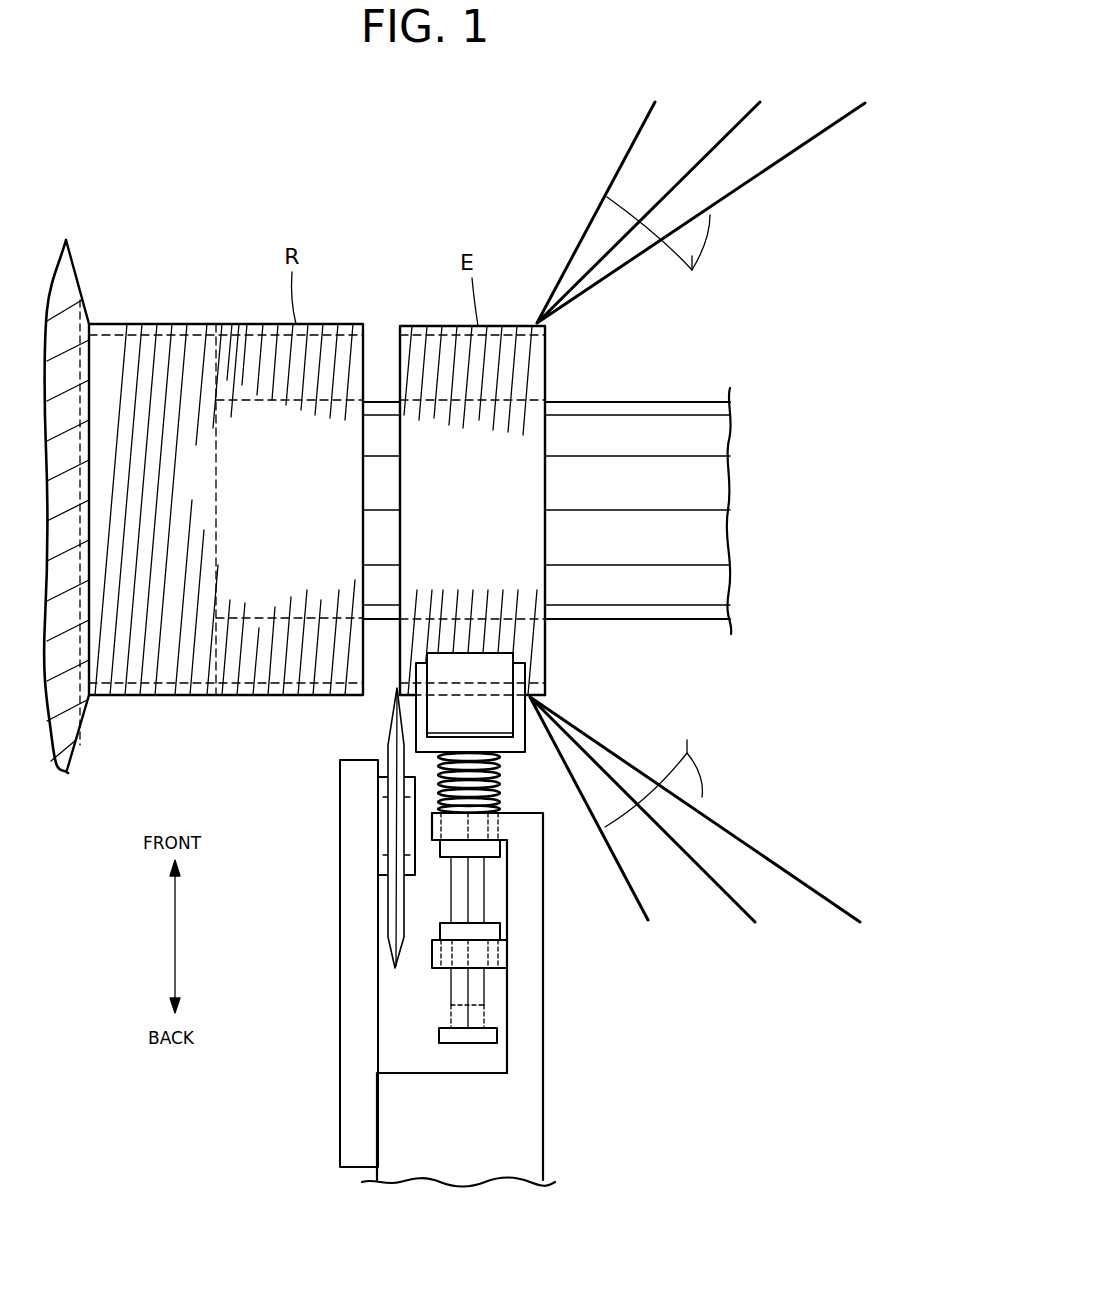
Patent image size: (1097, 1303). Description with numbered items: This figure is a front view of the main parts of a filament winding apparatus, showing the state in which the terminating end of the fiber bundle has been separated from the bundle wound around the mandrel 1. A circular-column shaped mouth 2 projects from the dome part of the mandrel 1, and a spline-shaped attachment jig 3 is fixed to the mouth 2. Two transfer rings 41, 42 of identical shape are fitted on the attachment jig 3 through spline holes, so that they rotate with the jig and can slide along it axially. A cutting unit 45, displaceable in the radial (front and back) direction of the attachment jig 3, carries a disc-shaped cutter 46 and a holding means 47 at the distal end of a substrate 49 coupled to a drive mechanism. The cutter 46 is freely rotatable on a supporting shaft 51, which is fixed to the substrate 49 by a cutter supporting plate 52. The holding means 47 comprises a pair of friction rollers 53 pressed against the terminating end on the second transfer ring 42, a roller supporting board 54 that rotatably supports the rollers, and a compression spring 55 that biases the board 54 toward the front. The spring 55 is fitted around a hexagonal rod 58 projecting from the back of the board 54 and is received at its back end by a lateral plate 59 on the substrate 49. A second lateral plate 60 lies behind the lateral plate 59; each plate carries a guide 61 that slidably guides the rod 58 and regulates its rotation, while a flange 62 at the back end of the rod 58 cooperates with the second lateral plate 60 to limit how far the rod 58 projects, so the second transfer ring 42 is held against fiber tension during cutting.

The mandrel 1 is at (72, 722).
The mouth 2 is at (150, 695).
The attachment jig 3 is at (668, 622).
The first transfer ring 41 is at (286, 695).
The second transfer ring 42 is at (543, 660).
The cutting unit 45 is at (263, 1063).
The cutter 46 is at (388, 952).
The holding means 47 is at (533, 752).
The substrate 49 is at (543, 1100).
The supporting shaft 51 is at (375, 812).
The cutter supporting plate 52 is at (340, 822).
The friction roller 53 is at (493, 645).
The roller supporting board 54 is at (527, 722).
The compression spring 55 is at (450, 752).
The rod 58 is at (490, 897).
The lateral plate 59 is at (432, 830).
The second lateral plate 60 is at (432, 953).
The guide 61 is at (507, 858).
The flange 62 is at (470, 1046).